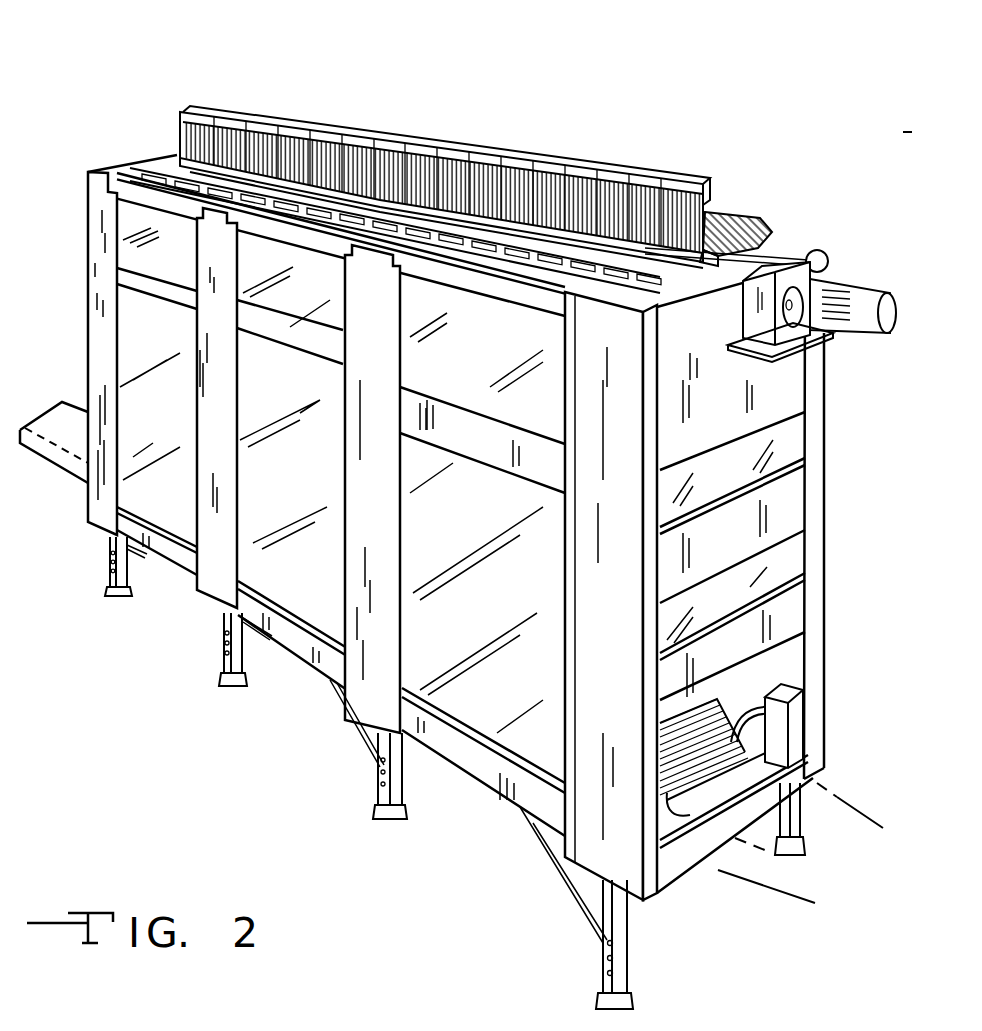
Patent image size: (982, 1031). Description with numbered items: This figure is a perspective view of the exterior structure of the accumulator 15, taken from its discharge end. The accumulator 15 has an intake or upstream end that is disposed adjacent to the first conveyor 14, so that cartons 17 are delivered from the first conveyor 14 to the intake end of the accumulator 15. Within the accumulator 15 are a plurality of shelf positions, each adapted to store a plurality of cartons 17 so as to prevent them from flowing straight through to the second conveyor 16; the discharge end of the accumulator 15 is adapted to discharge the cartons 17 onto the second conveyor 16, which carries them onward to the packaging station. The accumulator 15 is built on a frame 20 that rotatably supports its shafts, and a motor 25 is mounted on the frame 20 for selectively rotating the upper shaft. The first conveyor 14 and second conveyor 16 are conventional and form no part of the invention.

The first conveyor 14 is at (54, 403).
The accumulator 15 is at (253, 93).
The second conveyor 16 is at (838, 793).
The cartons 17 is at (610, 170).
The frame 20 is at (363, 648).
The motor 25 is at (848, 280).